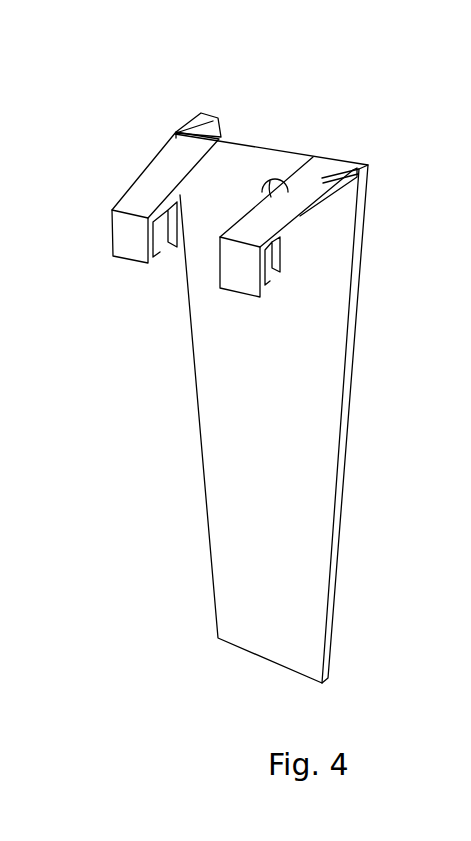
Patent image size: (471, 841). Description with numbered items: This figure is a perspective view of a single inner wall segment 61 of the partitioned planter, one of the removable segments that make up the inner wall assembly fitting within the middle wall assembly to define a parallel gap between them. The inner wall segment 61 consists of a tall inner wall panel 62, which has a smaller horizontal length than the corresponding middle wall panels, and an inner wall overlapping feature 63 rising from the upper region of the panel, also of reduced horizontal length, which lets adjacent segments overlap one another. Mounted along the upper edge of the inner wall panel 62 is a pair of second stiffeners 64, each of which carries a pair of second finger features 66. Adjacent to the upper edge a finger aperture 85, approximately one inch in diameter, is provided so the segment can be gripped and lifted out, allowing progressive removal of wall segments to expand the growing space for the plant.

The inner wall segment 61 is at (250, 357).
The inner wall panel 62 is at (283, 515).
The inner wall overlapping feature 63 is at (203, 112).
The second stiffener 64 is at (240, 221).
The second finger feature 66 is at (163, 239).
The first finger aperture 85 is at (273, 179).